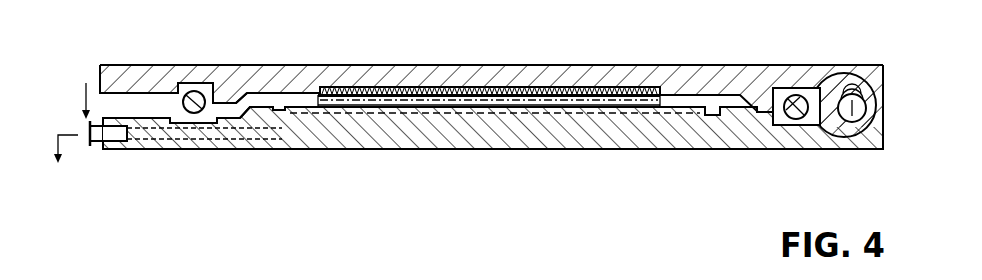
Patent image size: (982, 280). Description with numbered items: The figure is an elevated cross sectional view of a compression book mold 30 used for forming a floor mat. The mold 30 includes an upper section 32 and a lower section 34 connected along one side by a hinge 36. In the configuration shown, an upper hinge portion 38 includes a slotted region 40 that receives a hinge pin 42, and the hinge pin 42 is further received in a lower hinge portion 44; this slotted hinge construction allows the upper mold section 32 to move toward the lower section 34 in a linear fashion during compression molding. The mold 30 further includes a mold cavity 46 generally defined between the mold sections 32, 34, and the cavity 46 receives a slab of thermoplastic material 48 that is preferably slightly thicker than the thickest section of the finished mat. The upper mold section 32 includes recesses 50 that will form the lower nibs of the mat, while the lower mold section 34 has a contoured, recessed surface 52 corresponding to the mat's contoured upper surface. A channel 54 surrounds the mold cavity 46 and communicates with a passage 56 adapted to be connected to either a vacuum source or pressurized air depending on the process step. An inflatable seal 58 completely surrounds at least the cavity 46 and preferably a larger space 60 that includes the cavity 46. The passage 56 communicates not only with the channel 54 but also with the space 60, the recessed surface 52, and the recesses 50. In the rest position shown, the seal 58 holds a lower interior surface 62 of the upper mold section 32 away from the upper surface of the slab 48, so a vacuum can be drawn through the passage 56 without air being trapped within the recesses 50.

The compression book mold 30 is at (393, 43).
The upper mold section 32 is at (474, 66).
The lower mold section 34 is at (440, 150).
The hinge 36 is at (852, 36).
The upper hinge portion 38 is at (863, 72).
The slotted region 40 is at (852, 82).
The hinge pin 42 is at (813, 150).
The lower hinge portion 44 is at (796, 124).
The mold cavity 46 is at (594, 103).
The slab of thermoplastic material 48 is at (447, 93).
The recesses 50 is at (531, 107).
The contoured, recessed surface 52 is at (541, 114).
The channel 54 is at (287, 110).
The passage 56 is at (240, 150).
The inflatable seal 58 is at (183, 102).
The space 60 is at (250, 93).
The lower interior surface 62 is at (685, 99).